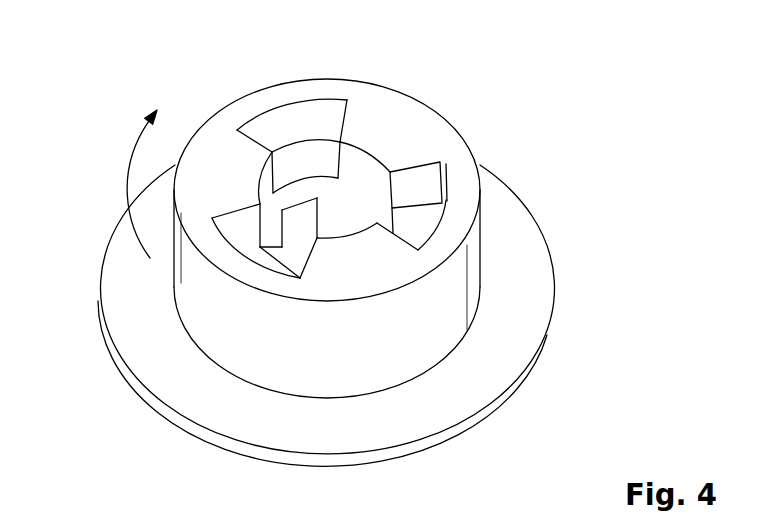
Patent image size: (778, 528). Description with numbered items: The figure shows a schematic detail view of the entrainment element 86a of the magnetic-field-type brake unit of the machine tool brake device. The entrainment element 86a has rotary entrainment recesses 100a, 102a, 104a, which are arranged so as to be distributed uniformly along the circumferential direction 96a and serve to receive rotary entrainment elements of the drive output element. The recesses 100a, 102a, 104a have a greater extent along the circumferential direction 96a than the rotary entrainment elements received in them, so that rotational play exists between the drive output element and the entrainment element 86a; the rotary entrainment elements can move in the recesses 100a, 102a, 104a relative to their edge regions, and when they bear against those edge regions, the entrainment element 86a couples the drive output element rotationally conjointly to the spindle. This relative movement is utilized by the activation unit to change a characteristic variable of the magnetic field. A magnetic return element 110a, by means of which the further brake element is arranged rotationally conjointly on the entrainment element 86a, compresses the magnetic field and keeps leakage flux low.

The entrainment element 86a is at (455, 268).
The circumferential direction 96a is at (127, 184).
The rotary entrainment recess 100a is at (262, 250).
The rotary entrainment recess 102a is at (430, 190).
The rotary entrainment recess 104a is at (293, 117).
The magnetic return element 110a is at (523, 332).